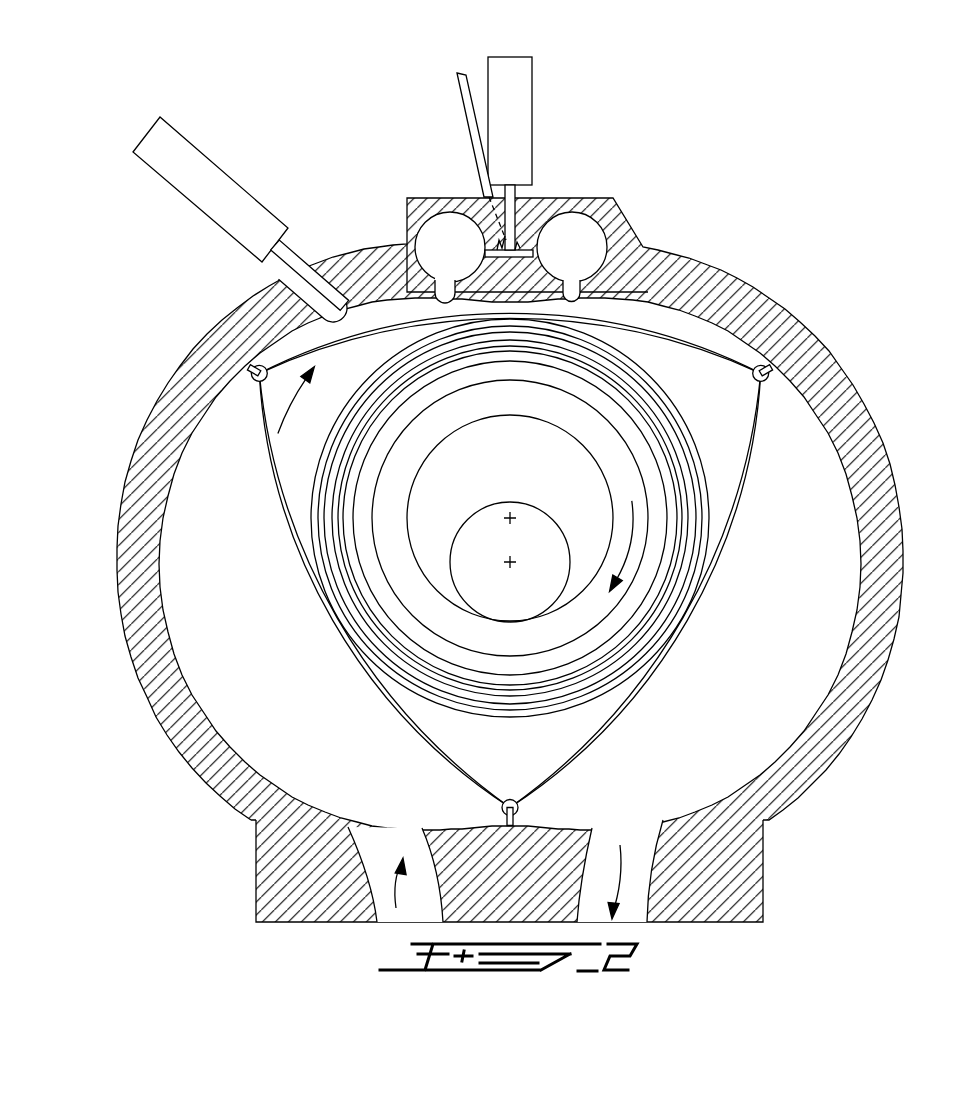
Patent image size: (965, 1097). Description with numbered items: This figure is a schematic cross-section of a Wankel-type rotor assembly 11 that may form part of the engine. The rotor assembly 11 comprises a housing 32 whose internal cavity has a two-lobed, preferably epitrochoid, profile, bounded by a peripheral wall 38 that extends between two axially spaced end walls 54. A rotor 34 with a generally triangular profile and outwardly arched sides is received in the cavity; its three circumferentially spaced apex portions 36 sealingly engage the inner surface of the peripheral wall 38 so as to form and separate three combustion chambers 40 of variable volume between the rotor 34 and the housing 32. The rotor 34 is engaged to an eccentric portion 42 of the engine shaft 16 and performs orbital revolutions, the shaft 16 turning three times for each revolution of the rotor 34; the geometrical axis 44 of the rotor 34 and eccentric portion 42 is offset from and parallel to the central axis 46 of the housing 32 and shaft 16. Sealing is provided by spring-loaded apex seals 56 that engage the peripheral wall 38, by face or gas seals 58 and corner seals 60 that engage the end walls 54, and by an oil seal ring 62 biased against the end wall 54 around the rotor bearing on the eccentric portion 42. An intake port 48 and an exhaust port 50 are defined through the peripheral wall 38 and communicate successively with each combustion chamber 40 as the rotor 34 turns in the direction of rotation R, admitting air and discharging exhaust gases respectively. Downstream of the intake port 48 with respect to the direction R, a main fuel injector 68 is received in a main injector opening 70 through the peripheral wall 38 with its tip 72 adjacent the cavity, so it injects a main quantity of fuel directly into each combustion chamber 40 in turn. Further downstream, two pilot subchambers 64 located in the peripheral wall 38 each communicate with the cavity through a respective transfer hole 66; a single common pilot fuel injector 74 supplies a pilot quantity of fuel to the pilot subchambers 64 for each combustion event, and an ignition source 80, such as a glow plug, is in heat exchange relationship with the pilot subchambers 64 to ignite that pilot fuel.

The rotor assembly 11 is at (840, 818).
The engine shaft 16 is at (485, 530).
The housing 32 is at (195, 777).
The rotor 34 is at (278, 540).
The apex portions 36 is at (241, 358).
The peripheral wall 38 is at (152, 689).
The combustion chambers 40 is at (240, 656).
The eccentric portion 42 is at (484, 465).
The geometrical axis 44 is at (513, 518).
The central axis 46 is at (513, 563).
The intake port 48 is at (397, 853).
The exhaust port 50 is at (620, 848).
The end walls 54 is at (195, 505).
The apex seals 56 is at (777, 360).
The face seals 58 is at (745, 495).
The corner seals 60 is at (768, 380).
The oil seal ring 62 is at (423, 363).
The pilot subchambers 64 is at (455, 242).
The transfer hole 66 is at (447, 292).
The main fuel injector 68 is at (200, 170).
The main injector opening 70 is at (363, 303).
The tip 72 is at (303, 297).
The pilot fuel injector 74 is at (522, 95).
The ignition source 80 is at (460, 91).
The direction of rotation R is at (280, 427).